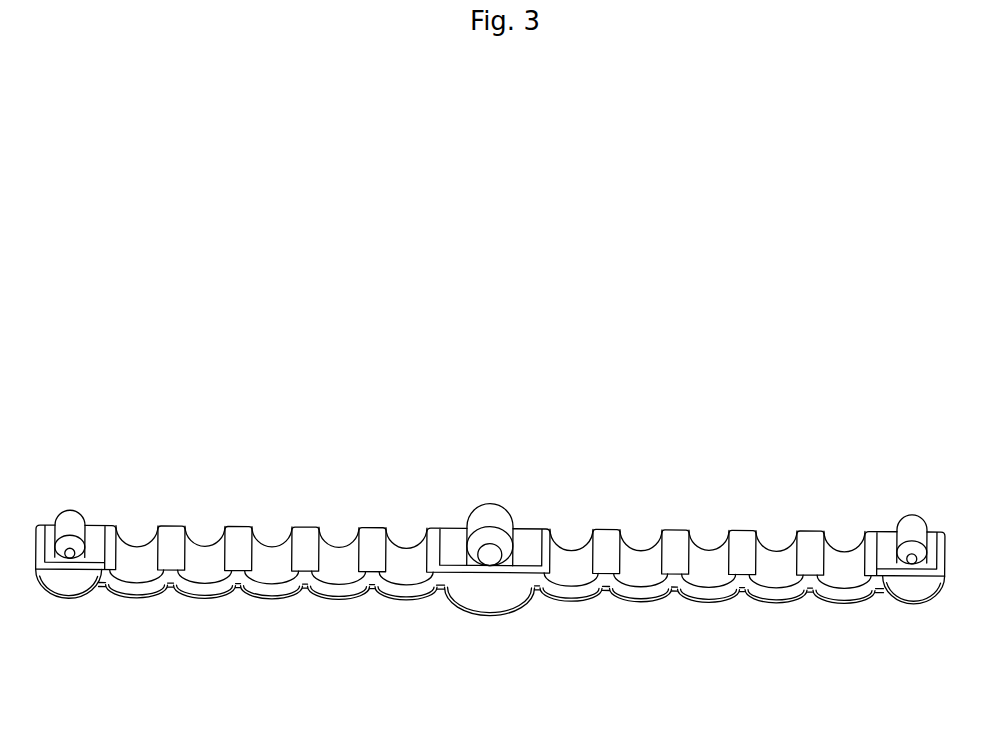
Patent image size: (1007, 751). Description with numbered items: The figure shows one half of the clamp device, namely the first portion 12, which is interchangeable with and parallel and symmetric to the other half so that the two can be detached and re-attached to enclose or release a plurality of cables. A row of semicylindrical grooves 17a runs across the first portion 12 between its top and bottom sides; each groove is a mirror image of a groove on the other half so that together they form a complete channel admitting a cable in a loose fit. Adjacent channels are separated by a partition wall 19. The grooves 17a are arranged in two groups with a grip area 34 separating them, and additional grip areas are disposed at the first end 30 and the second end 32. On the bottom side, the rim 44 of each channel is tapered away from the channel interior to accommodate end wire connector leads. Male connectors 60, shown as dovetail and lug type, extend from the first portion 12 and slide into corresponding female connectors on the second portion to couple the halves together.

The first portion 12 is at (235, 512).
The semicylindrical groove 17a is at (277, 557).
The partition wall 19 is at (808, 588).
The first end 30 is at (57, 585).
The second end 32 is at (922, 593).
The grip area 34 is at (487, 593).
The tapered rim 44 is at (268, 590).
The male connector 60 is at (70, 520).